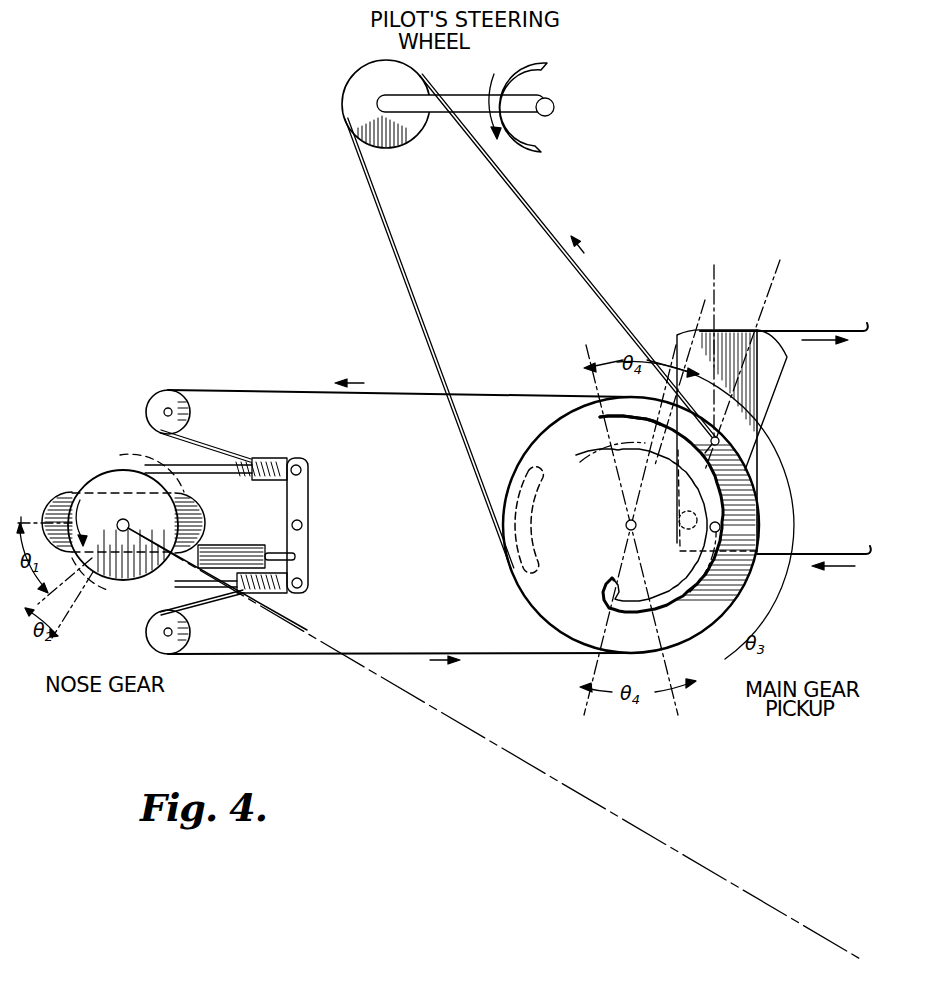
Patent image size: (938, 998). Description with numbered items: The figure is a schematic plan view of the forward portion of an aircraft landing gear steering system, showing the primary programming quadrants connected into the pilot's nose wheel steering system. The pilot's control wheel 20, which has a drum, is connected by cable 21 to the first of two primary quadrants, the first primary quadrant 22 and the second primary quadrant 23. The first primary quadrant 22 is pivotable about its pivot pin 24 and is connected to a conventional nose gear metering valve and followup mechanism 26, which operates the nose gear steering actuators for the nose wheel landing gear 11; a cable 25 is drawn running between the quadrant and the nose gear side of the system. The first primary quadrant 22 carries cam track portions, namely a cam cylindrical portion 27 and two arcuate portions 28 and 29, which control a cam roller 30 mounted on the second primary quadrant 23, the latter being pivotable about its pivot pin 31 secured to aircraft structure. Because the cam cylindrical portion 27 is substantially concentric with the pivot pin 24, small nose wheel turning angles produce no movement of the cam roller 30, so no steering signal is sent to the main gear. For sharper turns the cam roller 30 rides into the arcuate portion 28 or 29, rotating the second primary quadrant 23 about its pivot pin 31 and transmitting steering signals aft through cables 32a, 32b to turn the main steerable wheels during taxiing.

The nose wheel landing gear 11 is at (60, 484).
The pilot's control wheel 20 is at (549, 80).
The cable 21 is at (527, 205).
The first primary quadrant 22 is at (590, 586).
The second primary quadrant 23 is at (758, 439).
The pivot pin 24 is at (625, 526).
The nose gear steering cable 25 is at (270, 395).
The nose gear metering valve and followup mechanism 26 is at (310, 500).
The cam cylindrical portion 27 is at (707, 582).
The arcuate portion 28 is at (627, 604).
The arcuate portion 29 is at (648, 416).
The cam roller 30 is at (720, 526).
The pivot pin 31 is at (728, 449).
The cable 32a is at (850, 544).
The cable 32b is at (828, 328).